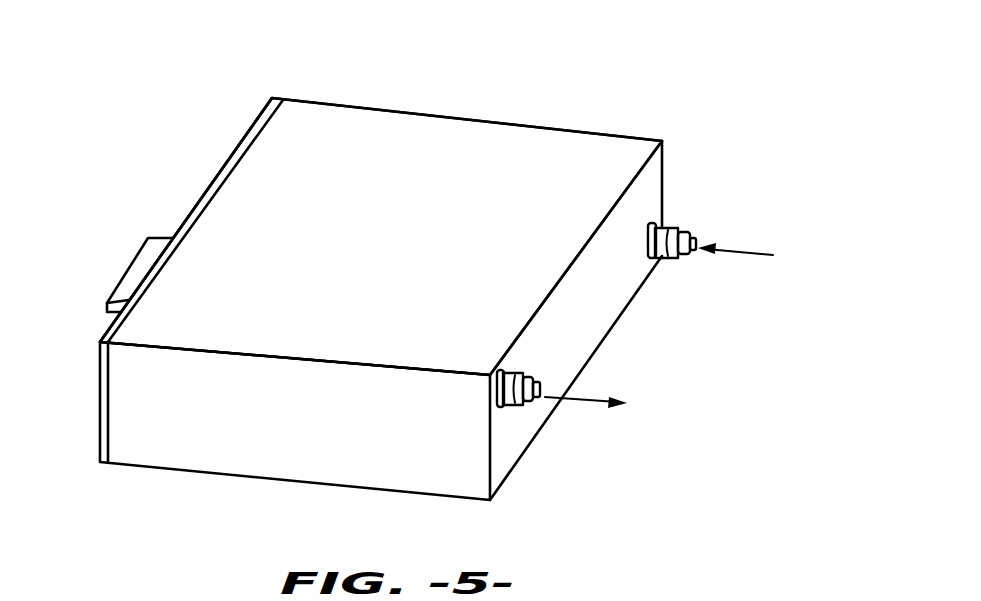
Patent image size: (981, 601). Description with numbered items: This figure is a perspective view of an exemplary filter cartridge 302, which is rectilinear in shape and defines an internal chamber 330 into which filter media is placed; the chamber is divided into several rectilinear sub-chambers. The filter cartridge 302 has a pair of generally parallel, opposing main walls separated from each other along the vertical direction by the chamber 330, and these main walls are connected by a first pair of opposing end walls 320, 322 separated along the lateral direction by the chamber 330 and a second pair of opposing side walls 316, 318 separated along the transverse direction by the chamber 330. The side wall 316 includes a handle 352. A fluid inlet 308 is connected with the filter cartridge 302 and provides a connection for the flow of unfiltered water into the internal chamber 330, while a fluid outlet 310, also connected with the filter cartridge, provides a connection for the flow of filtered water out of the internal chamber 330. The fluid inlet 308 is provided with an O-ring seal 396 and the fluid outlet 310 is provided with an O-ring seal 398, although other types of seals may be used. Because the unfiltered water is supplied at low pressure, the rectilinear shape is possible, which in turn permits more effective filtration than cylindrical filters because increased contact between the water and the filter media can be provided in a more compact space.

The filter cartridge 302 is at (432, 272).
The fluid inlet 308 is at (668, 230).
The fluid outlet 310 is at (508, 410).
The side wall 316 is at (227, 170).
The side wall 318 is at (617, 278).
The end wall 320 is at (598, 133).
The end wall 322 is at (208, 442).
The internal chamber 330 is at (345, 150).
The handle 352 is at (145, 262).
The O-ring seal 396 is at (677, 263).
The O-ring seal 398 is at (530, 375).